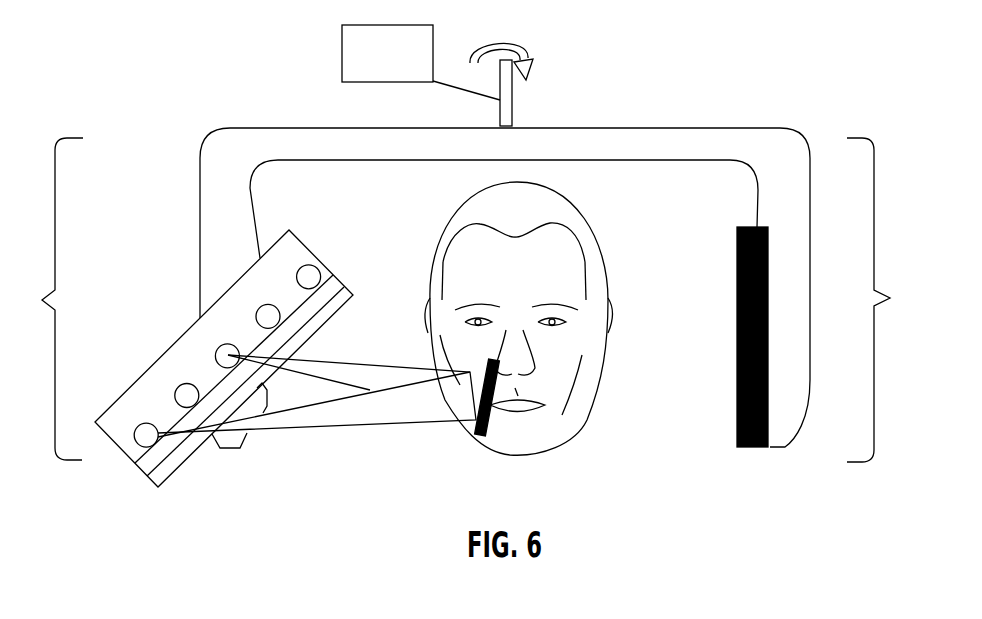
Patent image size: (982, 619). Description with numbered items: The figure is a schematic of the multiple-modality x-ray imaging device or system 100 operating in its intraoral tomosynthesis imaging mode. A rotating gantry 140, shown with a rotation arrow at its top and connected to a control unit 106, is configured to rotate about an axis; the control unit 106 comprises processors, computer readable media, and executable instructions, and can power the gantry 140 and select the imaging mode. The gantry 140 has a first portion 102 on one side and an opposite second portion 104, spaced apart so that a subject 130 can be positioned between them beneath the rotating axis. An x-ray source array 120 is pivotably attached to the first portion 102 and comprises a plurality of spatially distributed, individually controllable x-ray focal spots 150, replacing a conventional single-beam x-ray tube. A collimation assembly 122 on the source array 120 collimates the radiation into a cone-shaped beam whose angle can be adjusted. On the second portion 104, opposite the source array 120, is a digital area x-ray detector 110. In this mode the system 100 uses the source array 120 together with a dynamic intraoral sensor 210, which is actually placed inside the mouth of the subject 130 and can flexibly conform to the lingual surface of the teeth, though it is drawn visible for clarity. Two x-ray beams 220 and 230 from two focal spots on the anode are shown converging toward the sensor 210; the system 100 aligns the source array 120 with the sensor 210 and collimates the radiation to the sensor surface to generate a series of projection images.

The x-ray imaging device or system 100 is at (725, 86).
The first portion 102 is at (44, 299).
The second portion 104 is at (886, 300).
The control unit 106 is at (342, 56).
The digital area x-ray detector 110 is at (768, 388).
The x-ray source array 120 is at (119, 447).
The collimation assembly 122 is at (165, 459).
The subject 130 is at (428, 264).
The rotating gantry 140 is at (441, 126).
The x-ray focal spots 150 is at (252, 315).
The dynamic intraoral sensor 210 is at (487, 433).
The x-ray beam 220 is at (327, 432).
The x-ray beam 230 is at (317, 358).